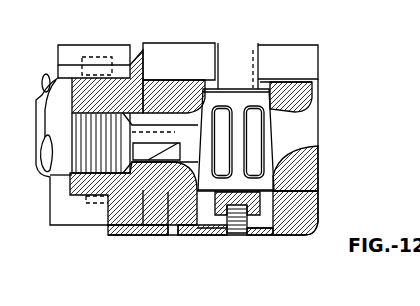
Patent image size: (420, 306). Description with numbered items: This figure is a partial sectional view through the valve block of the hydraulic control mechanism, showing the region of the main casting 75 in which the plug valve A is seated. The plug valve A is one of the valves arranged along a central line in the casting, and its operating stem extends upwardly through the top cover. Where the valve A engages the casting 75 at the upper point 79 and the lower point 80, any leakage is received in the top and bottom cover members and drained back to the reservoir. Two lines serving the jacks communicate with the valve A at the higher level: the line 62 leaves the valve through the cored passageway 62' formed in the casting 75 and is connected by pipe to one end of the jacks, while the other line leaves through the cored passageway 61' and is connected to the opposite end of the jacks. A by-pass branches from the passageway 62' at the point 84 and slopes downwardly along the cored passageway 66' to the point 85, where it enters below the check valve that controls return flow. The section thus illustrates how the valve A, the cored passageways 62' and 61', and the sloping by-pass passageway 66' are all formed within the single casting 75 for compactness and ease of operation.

The line 62 is at (62, 137).
The cored passageway 62' is at (179, 78).
The point 79 is at (282, 82).
The cored passageway 61' is at (316, 80).
The plug valve A is at (270, 135).
The main casting 75 is at (315, 165).
The point 80 is at (273, 189).
The point 84 is at (161, 151).
The point 85 is at (86, 203).
The cored passageway 66' is at (190, 243).